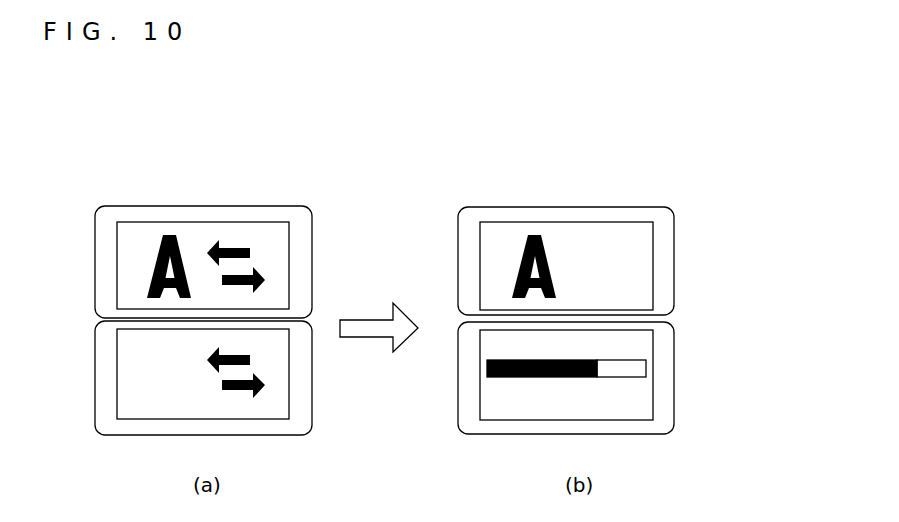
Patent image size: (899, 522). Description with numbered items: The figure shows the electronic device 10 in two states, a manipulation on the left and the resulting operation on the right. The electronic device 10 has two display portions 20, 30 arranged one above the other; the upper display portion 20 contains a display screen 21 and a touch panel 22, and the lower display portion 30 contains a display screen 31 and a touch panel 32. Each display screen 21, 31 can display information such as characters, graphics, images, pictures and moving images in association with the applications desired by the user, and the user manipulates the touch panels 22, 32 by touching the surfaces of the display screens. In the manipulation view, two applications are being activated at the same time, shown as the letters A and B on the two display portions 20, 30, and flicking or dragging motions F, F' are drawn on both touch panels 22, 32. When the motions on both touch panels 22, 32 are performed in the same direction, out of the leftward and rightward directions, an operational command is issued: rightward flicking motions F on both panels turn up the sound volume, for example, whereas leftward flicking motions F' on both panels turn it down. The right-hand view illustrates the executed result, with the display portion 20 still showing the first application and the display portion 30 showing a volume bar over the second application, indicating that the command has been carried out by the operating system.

The electronic device 10 is at (80, 145).
The display portion 20 is at (82, 217).
The display screen 21 is at (128, 298).
The touch panel 22 is at (130, 250).
The display portion 30 is at (78, 365).
The display screen 31 is at (132, 410).
The touch panel 32 is at (127, 382).
The flicking motion in the leftward direction F' is at (277, 276).
The flicking motion in the rightward direction F is at (281, 345).